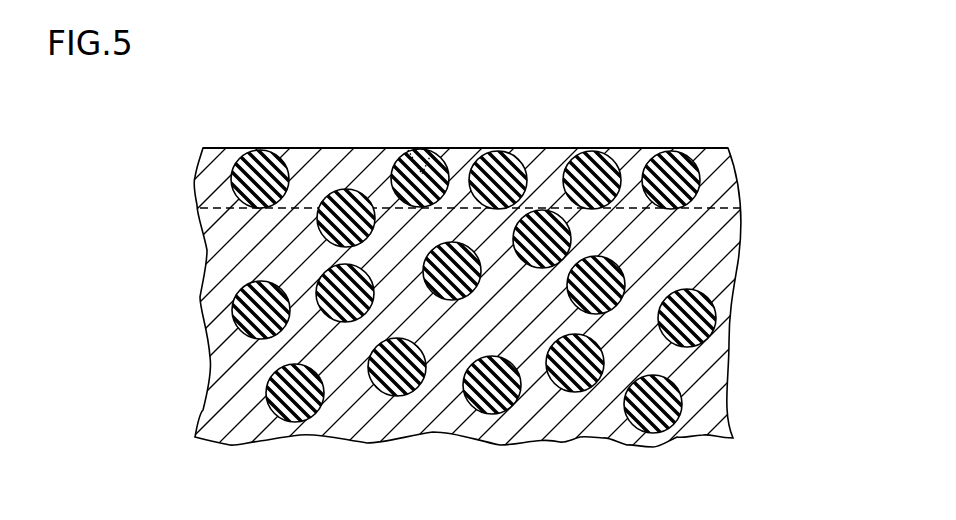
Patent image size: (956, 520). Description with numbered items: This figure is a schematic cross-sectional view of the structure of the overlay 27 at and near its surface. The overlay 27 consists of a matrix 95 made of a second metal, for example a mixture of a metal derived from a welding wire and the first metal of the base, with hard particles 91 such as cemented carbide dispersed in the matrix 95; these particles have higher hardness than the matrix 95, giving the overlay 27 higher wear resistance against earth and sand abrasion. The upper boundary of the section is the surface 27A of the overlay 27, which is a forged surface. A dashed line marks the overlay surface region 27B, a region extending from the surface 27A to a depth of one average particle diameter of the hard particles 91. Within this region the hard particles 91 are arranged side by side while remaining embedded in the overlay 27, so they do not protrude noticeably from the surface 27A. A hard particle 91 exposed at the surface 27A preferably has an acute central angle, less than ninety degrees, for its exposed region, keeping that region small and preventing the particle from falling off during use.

The overlay 27 is at (748, 132).
The surface 27A is at (465, 149).
The overlay surface region 27B is at (213, 181).
The hard particles 91 is at (262, 163).
The matrix 95 is at (245, 368).